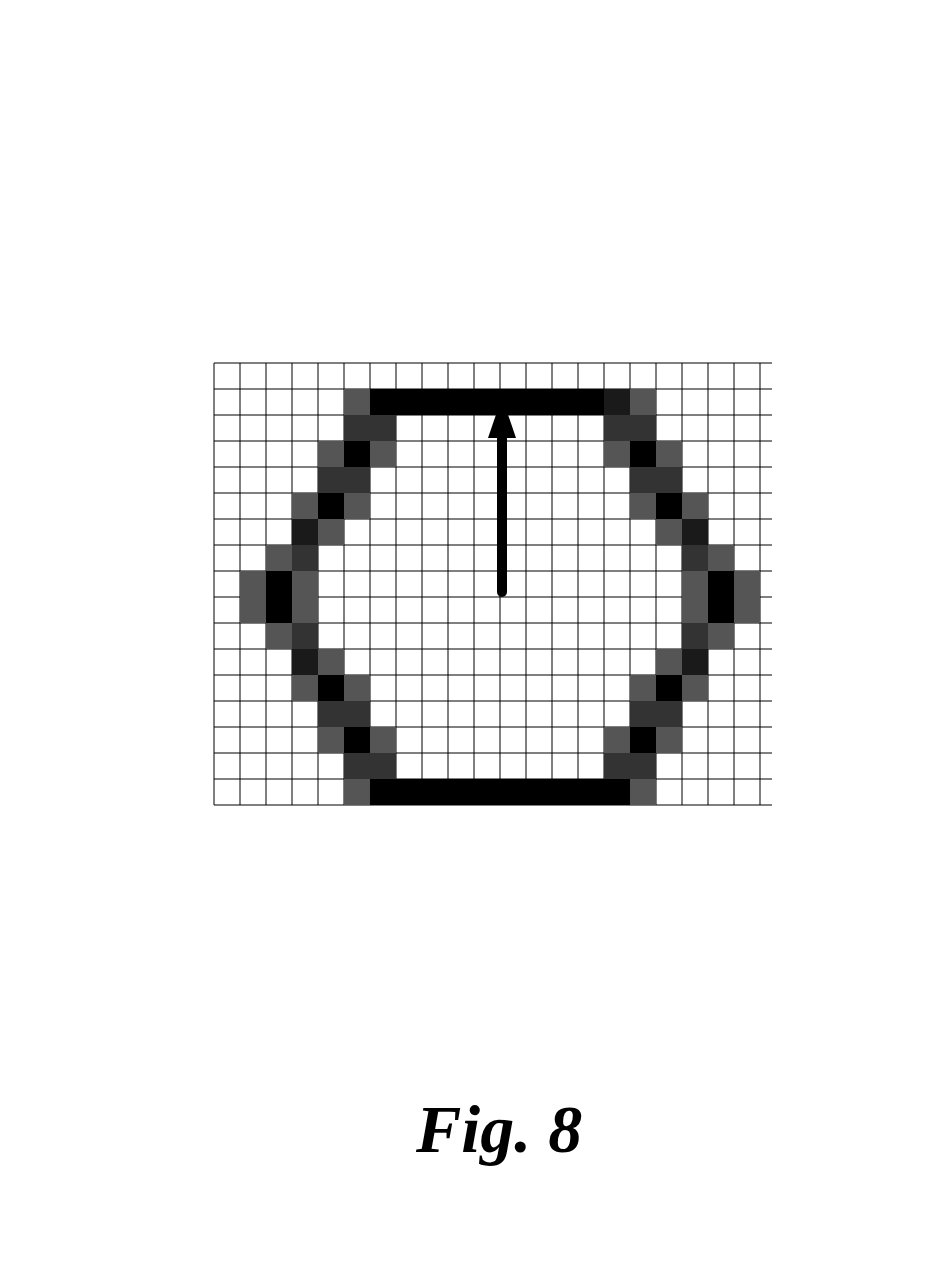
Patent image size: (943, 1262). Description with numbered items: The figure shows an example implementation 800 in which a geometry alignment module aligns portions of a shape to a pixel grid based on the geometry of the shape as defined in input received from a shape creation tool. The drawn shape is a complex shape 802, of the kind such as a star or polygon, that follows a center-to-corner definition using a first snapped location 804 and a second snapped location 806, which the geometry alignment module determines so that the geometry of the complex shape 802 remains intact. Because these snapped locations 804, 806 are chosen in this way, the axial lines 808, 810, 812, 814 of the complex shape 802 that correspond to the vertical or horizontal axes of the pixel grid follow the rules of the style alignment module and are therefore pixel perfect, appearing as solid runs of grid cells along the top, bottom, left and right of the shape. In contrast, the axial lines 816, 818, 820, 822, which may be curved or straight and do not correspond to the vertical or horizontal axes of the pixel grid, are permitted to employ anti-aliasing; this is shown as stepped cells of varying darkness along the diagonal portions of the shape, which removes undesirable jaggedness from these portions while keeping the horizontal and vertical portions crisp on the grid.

The example implementation 800 is at (168, 85).
The complex shape 802 is at (520, 388).
The first snapped location 804 is at (503, 597).
The second snapped location 806 is at (497, 398).
The axial line 808 is at (266, 597).
The axial line 810 is at (505, 806).
The axial line 812 is at (735, 575).
The axial line 814 is at (617, 388).
The axial line 816 is at (327, 468).
The axial line 818 is at (315, 683).
The axial line 820 is at (685, 691).
The axial line 822 is at (673, 482).